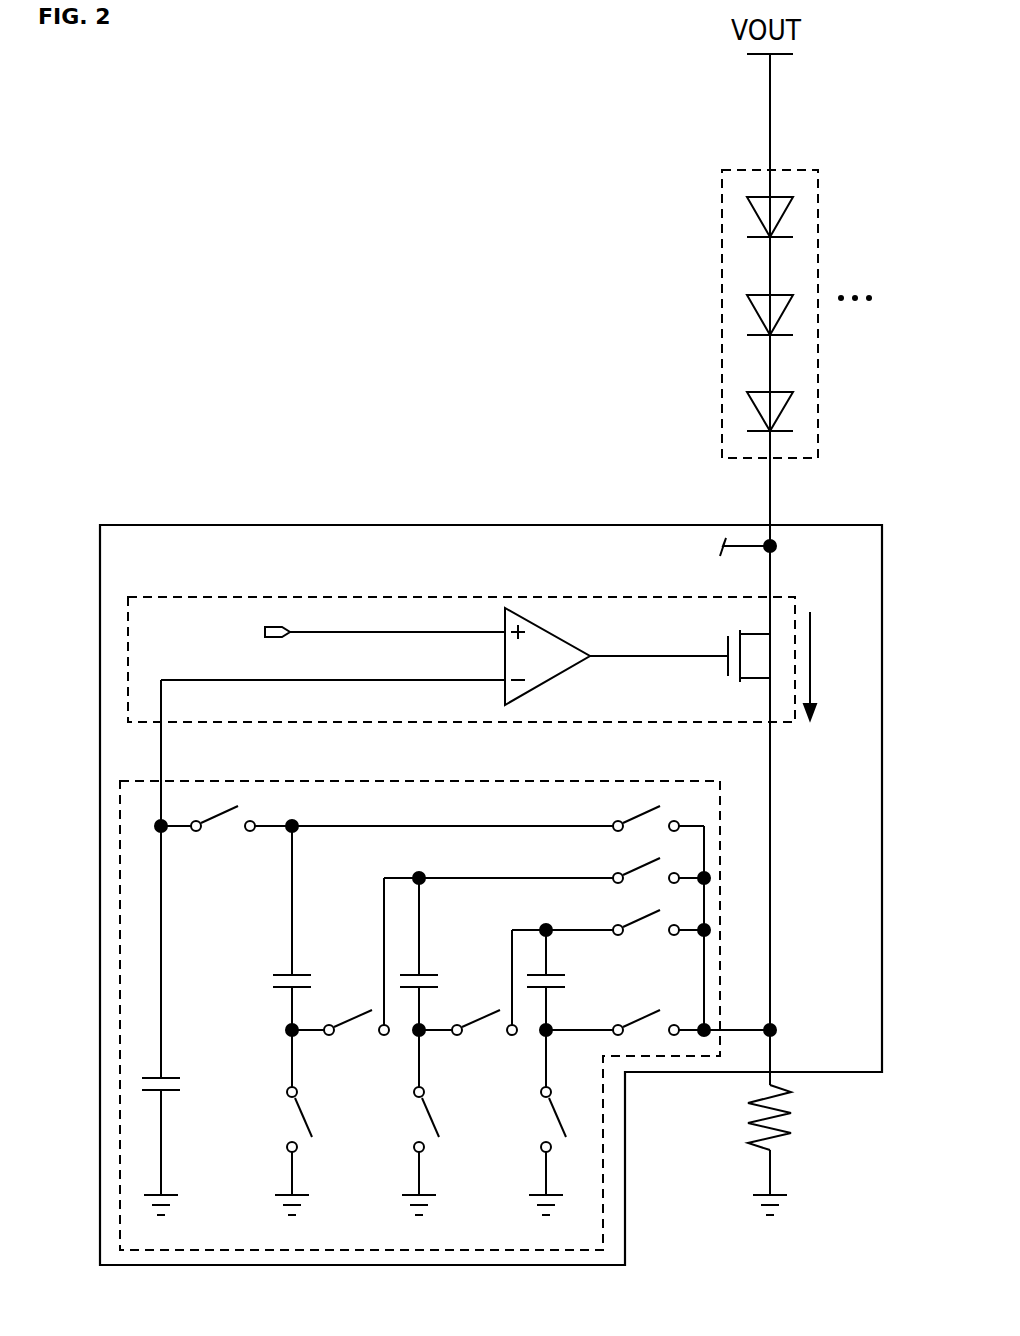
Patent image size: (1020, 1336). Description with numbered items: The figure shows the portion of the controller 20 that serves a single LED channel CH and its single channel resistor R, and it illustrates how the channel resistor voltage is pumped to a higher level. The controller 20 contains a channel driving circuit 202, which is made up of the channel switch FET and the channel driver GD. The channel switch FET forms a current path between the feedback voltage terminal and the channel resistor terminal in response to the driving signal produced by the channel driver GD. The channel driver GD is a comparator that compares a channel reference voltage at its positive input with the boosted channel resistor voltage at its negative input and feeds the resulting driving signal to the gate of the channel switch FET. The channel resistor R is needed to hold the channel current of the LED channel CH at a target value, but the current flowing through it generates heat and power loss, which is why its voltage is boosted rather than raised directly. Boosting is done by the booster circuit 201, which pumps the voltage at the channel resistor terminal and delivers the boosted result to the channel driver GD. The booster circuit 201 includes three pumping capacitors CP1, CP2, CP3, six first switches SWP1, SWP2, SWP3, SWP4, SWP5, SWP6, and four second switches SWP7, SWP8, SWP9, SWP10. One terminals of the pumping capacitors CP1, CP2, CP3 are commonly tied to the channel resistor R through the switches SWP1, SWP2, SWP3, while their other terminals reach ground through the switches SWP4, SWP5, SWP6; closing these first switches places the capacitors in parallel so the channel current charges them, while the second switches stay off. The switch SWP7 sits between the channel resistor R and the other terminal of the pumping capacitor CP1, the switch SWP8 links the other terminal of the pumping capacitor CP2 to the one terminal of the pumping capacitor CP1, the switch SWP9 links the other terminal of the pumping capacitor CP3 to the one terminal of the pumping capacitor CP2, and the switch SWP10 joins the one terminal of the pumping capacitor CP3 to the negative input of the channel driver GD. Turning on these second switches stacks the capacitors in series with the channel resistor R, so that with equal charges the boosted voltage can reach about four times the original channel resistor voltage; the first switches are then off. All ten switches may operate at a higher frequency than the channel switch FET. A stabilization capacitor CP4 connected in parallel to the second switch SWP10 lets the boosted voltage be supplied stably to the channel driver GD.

The controller 20 is at (398, 527).
The booster circuit 201 is at (400, 781).
The channel driving circuit 202 is at (378, 597).
The LED channel CH is at (790, 170).
The channel driver GD is at (545, 622).
The channel switch FET is at (732, 676).
The channel resistor R is at (785, 1150).
The pumping capacitor CP1 is at (569, 984).
The pumping capacitor CP2 is at (442, 984).
The pumping capacitor CP3 is at (315, 984).
The stabilization capacitor CP4 is at (185, 1132).
The first switch SWP1 is at (658, 805).
The first switch SWP2 is at (661, 858).
The first switch SWP3 is at (661, 910).
The first switch SWP4 is at (329, 1141).
The first switch SWP5 is at (458, 1141).
The first switch SWP6 is at (570, 1139).
The second switch SWP7 is at (691, 1010).
The second switch SWP8 is at (471, 1040).
The second switch SWP9 is at (343, 1040).
The second switch SWP10 is at (213, 806).